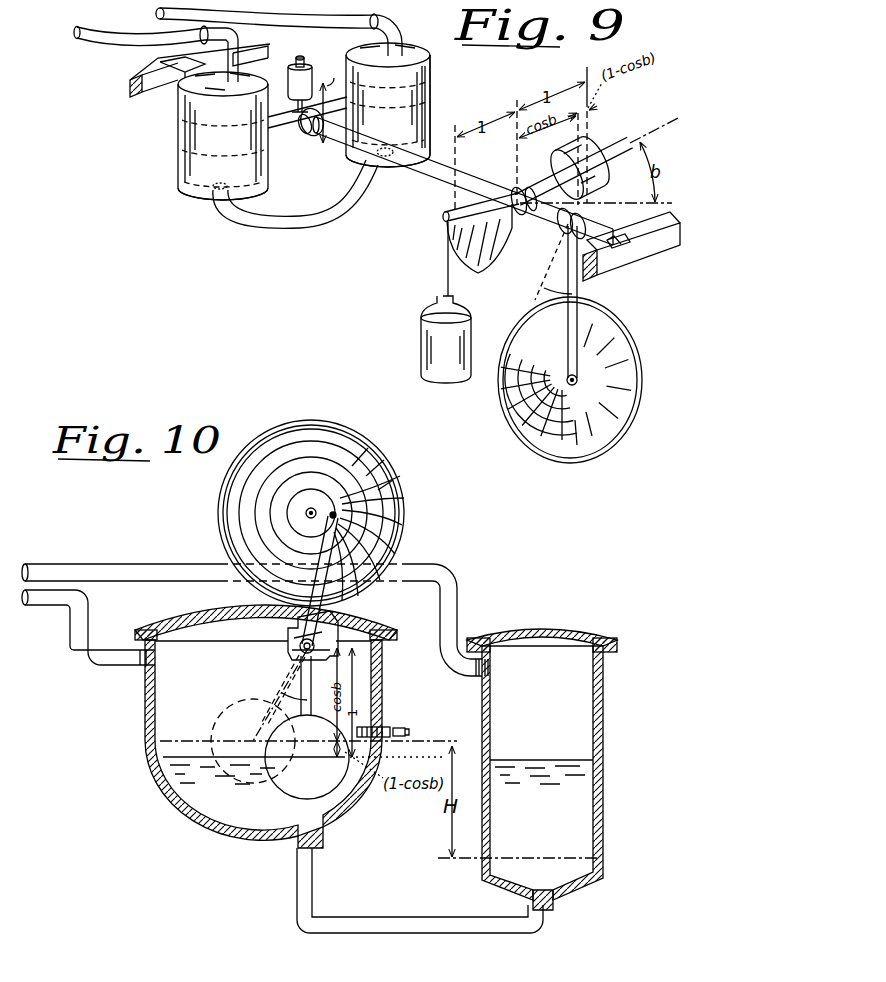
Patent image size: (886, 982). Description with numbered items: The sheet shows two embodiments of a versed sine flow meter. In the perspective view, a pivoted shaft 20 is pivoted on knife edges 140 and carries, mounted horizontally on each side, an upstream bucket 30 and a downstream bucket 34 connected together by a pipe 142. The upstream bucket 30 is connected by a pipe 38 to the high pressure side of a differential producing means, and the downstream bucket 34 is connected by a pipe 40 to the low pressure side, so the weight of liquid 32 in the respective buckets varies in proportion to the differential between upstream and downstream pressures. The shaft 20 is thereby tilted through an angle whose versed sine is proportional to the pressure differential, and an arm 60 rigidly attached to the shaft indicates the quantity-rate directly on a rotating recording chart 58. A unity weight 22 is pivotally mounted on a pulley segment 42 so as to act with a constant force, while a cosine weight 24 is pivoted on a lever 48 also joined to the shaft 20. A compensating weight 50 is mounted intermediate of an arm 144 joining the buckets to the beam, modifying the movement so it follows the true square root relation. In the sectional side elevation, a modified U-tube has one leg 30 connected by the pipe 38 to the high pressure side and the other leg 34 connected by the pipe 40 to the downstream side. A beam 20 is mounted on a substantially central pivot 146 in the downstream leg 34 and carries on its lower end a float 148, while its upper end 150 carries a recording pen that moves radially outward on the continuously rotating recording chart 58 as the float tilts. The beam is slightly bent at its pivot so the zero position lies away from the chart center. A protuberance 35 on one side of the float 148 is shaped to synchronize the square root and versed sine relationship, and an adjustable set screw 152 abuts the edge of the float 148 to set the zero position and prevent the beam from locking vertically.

In FIG. 9, the pivoted shaft 20 is at (428, 177).
In FIG. 10, the pivoted shaft 20 is at (294, 634).
In FIG. 9, the unity weight 22 is at (430, 312).
In FIG. 9, the cosine weight 24 is at (596, 142).
In FIG. 9, the upstream bucket 30 is at (178, 145).
In FIG. 10, the upstream bucket 30 is at (484, 699).
In FIG. 9, the liquid 32 is at (196, 188).
In FIG. 9, the downstream bucket 34 is at (428, 110).
In FIG. 10, the downstream bucket 34 is at (145, 683).
In FIG. 10, the protuberance 35 is at (388, 727).
In FIG. 9, the pipe 38 is at (168, 38).
In FIG. 10, the pipe 38 is at (456, 596).
In FIG. 9, the pipe 40 is at (300, 18).
In FIG. 10, the pipe 40 is at (96, 661).
In FIG. 9, the pulley segment 42 is at (504, 230).
In FIG. 9, the lever 48 is at (550, 178).
In FIG. 9, the compensating weight 50 is at (294, 72).
In FIG. 9, the recording chart 58 is at (606, 310).
In FIG. 10, the recording chart 58 is at (392, 500).
In FIG. 9, the arm 60 is at (580, 290).
In FIG. 9, the knife edges 140 is at (160, 68).
In FIG. 9, the pipe 142 is at (312, 218).
In FIG. 9, the arm 144 is at (279, 135).
In FIG. 9, the central pivot 146 is at (612, 237).
In FIG. 10, the central pivot 146 is at (299, 648).
In FIG. 10, the float 148 is at (327, 784).
In FIG. 10, the upper end of beam 150 is at (357, 574).
In FIG. 10, the adjustable set screw 152 is at (409, 731).